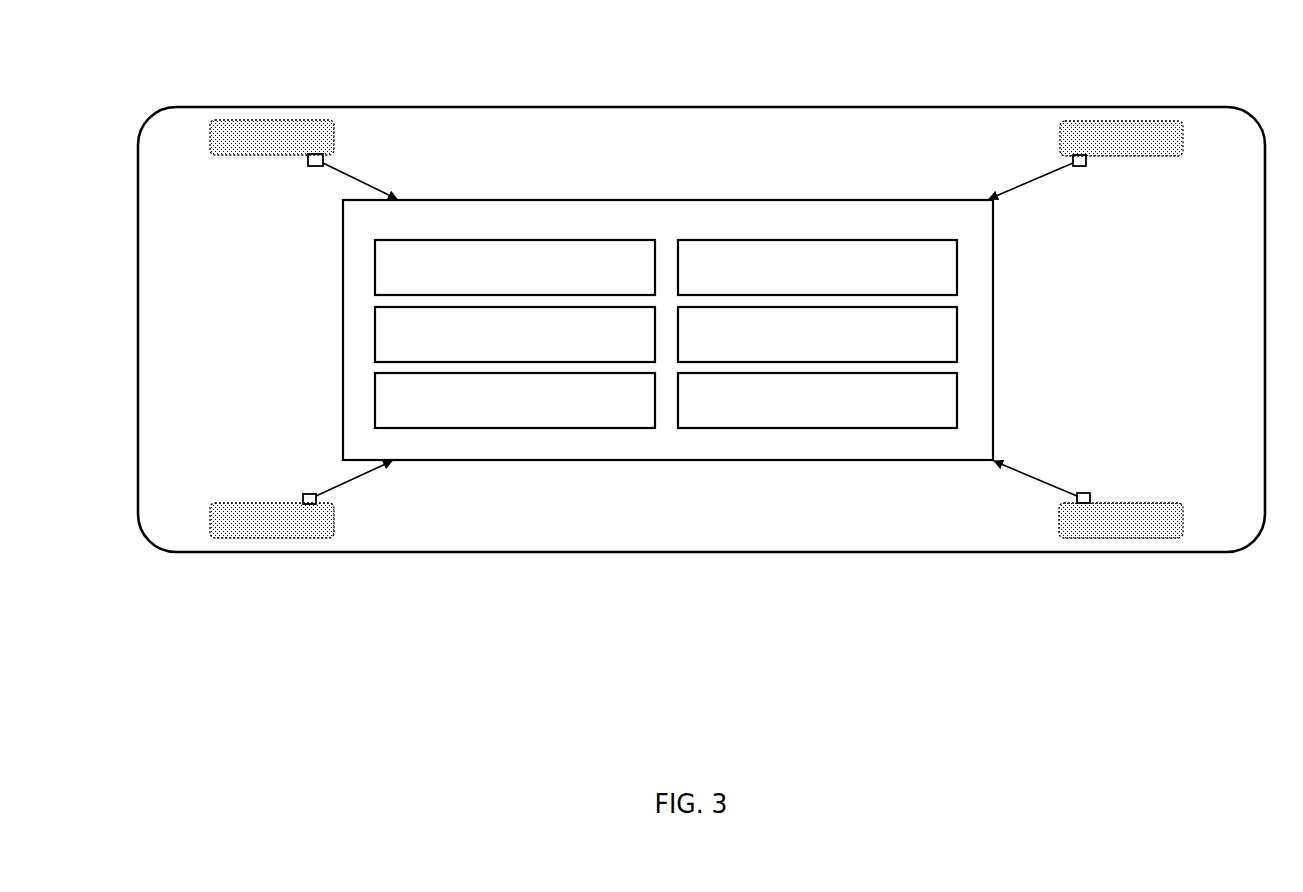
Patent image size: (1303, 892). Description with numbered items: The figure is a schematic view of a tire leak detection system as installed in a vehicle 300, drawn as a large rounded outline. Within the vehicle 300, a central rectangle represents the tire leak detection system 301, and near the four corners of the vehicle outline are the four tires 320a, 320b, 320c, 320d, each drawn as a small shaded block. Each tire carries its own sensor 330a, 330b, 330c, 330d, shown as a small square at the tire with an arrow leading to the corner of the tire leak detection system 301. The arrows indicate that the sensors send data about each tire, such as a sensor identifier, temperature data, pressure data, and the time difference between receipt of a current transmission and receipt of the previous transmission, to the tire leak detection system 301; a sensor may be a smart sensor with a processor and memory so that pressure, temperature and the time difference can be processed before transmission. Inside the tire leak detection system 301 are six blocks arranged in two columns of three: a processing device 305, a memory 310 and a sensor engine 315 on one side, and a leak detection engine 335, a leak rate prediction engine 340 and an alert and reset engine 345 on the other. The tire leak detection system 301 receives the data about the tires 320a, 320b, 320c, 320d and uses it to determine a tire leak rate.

The vehicle 300 is at (403, 108).
The tire leak detection system 301 is at (668, 330).
The processing device 305 is at (515, 267).
The memory 310 is at (515, 334).
The sensor engine 315 is at (515, 400).
The leak detection engine 335 is at (817, 267).
The leak rate prediction engine 340 is at (817, 334).
The alert and reset engine 345 is at (817, 400).
The tire 320a is at (272, 137).
The tire 320b is at (272, 520).
The tire 320c is at (1121, 138).
The tire 320d is at (1121, 520).
The sensor 330a is at (318, 167).
The sensor 330b is at (305, 494).
The sensor 330c is at (1079, 167).
The sensor 330d is at (1084, 493).